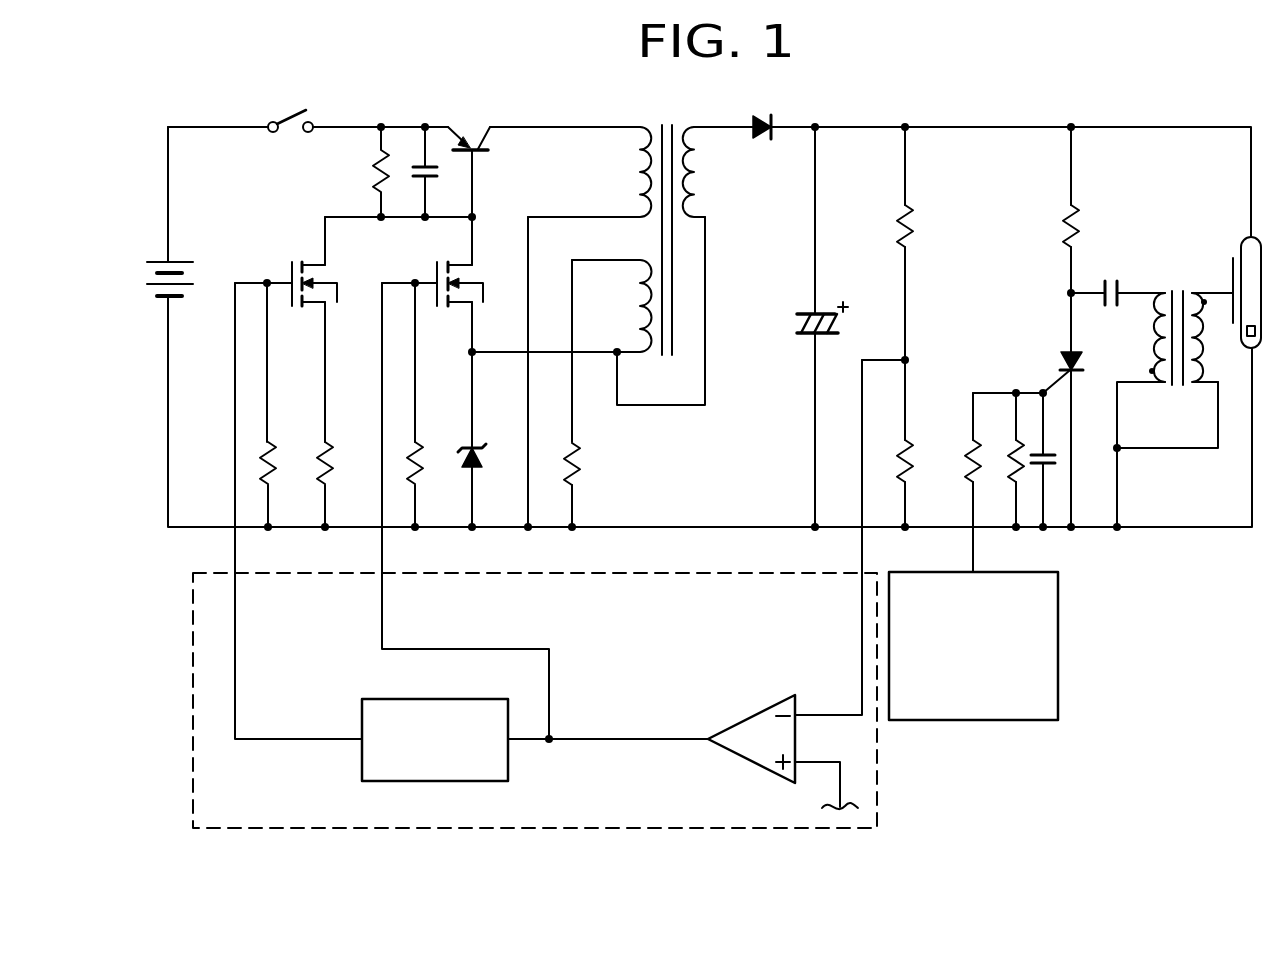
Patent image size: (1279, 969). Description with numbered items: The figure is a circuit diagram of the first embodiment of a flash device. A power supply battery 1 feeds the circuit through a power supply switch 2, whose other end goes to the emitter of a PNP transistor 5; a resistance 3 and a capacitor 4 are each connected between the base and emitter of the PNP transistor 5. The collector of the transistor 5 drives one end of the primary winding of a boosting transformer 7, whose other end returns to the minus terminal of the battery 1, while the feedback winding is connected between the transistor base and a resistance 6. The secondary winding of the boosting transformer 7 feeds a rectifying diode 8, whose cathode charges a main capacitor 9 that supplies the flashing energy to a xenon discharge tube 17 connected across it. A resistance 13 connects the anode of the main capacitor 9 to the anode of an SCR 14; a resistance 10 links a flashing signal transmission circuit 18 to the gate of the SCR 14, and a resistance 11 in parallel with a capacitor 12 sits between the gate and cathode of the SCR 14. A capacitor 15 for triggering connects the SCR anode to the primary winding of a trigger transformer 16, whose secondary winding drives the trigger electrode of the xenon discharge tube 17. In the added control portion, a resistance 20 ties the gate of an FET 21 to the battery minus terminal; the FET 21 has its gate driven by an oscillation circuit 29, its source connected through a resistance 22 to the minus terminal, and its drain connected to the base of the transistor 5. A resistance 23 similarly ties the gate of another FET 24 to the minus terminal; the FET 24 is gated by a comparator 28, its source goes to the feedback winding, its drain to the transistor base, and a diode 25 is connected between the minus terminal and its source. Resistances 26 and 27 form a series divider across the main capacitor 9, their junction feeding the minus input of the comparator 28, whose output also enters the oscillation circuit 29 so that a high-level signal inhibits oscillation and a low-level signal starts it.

The power supply battery 1 is at (193, 281).
The power supply switch 2 is at (313, 110).
The resistance 3 is at (374, 173).
The capacitor 4 is at (437, 172).
The PNP transistor 5 is at (473, 135).
The resistance 6 is at (583, 462).
The boosting transformer 7 is at (668, 124).
The rectifying diode 8 is at (766, 120).
The main capacitor 9 is at (828, 310).
The resistance 10 is at (963, 472).
The resistance 11 is at (1013, 472).
The capacitor 12 is at (1053, 452).
The resistance 13 is at (1080, 218).
The SCR 14 is at (1065, 349).
The capacitor for triggering 15 is at (1112, 281).
The trigger transformer 16 is at (1177, 292).
The xenon discharge tube 17 is at (1243, 238).
The flashing signal transmission circuit 18 is at (1062, 601).
The resistance 20 is at (276, 462).
The FET 21 is at (333, 264).
The resistance 22 is at (333, 462).
The resistance 23 is at (423, 462).
The FET 24 is at (479, 264).
The diode 25 is at (483, 452).
The resistance 26 is at (914, 218).
The resistance 27 is at (915, 449).
The comparator 28 is at (775, 700).
The oscillation circuit 29 is at (470, 699).